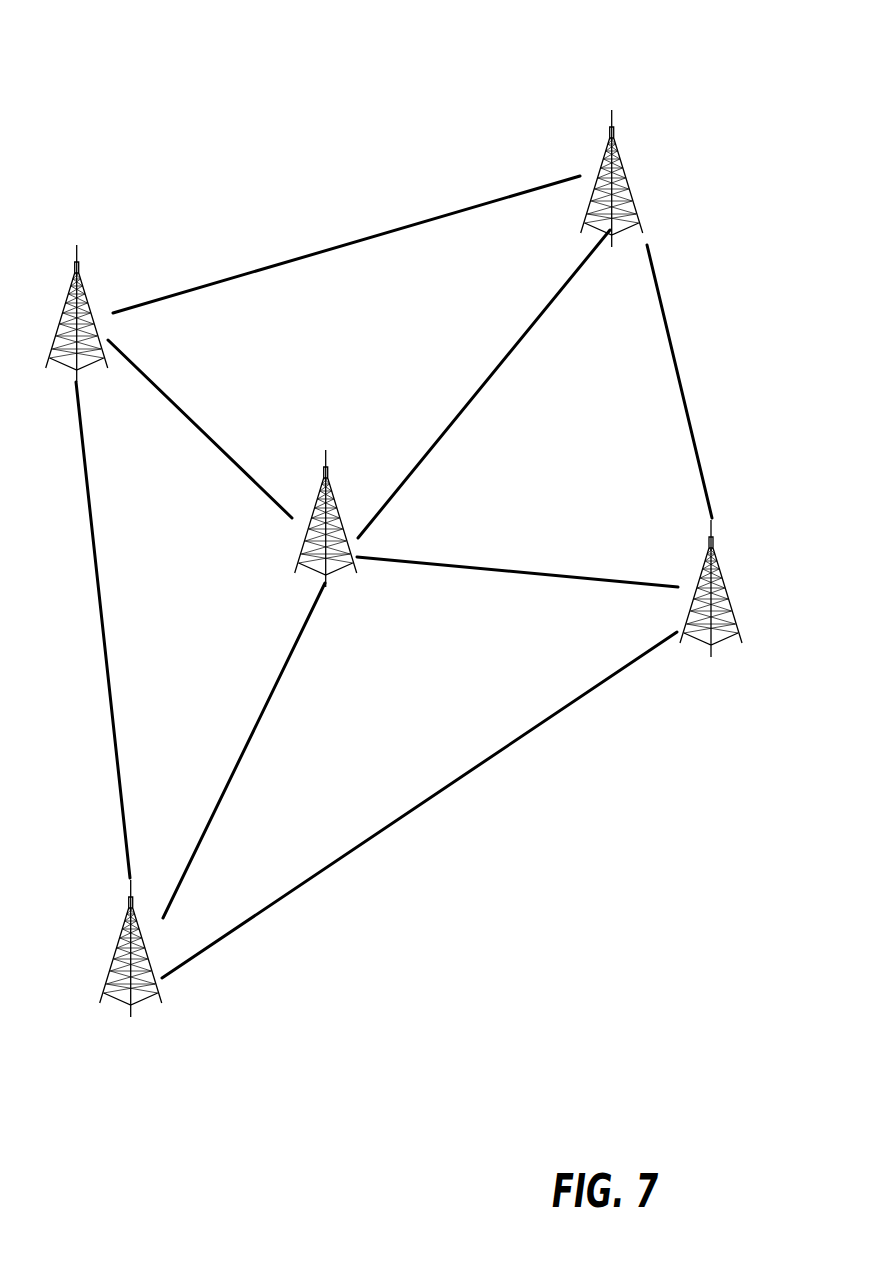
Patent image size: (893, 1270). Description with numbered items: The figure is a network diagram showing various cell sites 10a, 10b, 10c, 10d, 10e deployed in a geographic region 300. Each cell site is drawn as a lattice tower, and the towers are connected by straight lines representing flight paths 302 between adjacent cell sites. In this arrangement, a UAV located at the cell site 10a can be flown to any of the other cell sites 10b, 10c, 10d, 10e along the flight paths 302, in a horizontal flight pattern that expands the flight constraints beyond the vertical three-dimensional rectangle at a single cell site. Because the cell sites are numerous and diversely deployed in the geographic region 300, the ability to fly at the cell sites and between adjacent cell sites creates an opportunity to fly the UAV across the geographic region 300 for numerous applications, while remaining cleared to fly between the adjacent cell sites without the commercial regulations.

The geographic region 300 is at (426, 492).
The flight paths 302 is at (696, 319).
The cell site 10a is at (131, 244).
The cell site 10b is at (674, 124).
The cell site 10c is at (331, 414).
The cell site 10d is at (744, 547).
The cell site 10e is at (162, 939).